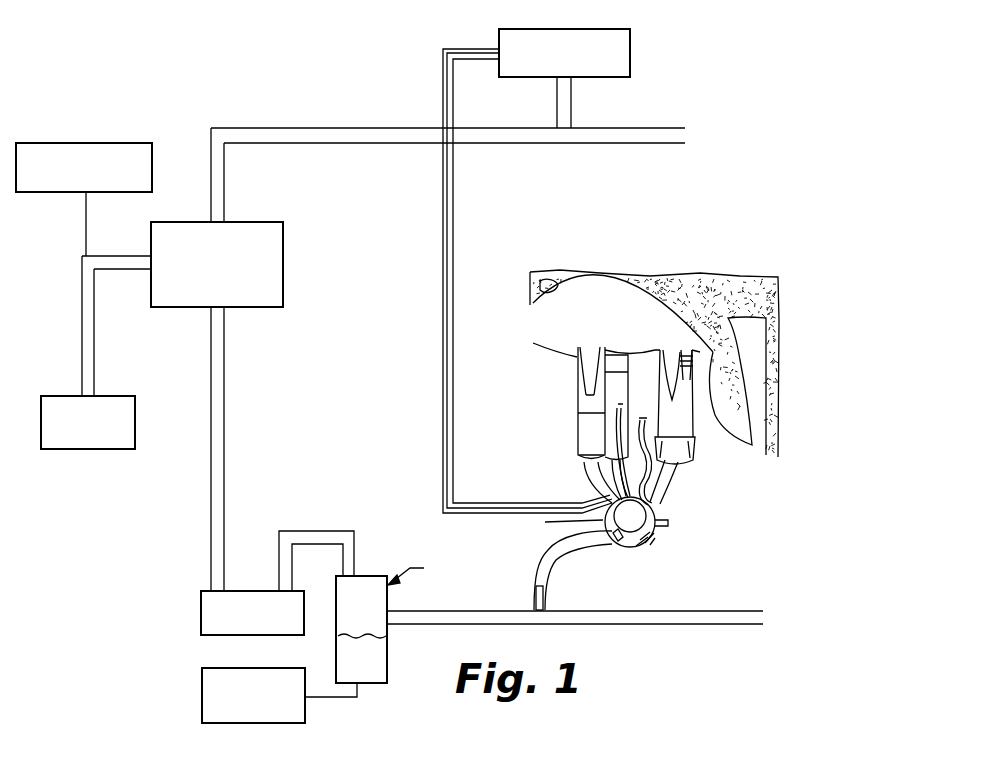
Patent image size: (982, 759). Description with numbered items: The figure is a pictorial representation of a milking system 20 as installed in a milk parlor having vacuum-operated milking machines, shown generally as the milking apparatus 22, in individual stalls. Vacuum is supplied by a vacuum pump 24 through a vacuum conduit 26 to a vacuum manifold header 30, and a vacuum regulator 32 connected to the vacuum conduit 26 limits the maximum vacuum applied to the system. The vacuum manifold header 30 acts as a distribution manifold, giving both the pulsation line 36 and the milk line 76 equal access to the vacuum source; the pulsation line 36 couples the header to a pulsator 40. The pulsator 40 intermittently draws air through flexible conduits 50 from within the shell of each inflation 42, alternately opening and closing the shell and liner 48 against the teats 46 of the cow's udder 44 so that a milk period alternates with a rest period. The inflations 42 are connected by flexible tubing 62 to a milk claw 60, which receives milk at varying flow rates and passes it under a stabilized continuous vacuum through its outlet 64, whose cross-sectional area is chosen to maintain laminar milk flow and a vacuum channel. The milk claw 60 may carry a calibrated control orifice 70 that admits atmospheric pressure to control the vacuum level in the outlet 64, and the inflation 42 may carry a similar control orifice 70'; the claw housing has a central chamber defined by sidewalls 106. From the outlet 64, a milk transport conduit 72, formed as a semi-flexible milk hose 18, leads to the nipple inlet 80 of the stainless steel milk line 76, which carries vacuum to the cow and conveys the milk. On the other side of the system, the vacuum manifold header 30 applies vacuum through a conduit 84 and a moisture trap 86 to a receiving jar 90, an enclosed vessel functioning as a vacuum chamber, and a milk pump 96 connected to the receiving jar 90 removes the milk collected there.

The milk hose 18 is at (548, 553).
The milking system 20 is at (350, 324).
The milking apparatus 22 is at (702, 425).
The vacuum pump 24 is at (120, 394).
The vacuum conduit 26 is at (80, 327).
The vacuum manifold header 30 is at (285, 235).
The vacuum regulator 32 is at (122, 143).
The pulsation line 36 is at (323, 128).
The pulsator 40 is at (633, 53).
The inflation 42 is at (675, 440).
The cow's udder 44 is at (637, 297).
The teat 46 is at (687, 373).
The shell and liner 48 is at (577, 372).
The flexible conduit 50 is at (455, 237).
The milk claw 60 is at (647, 546).
The flexible tubing 62 is at (680, 497).
The outlet 64 is at (612, 541).
The control orifice 70 is at (689, 534).
The control orifice 70' is at (571, 425).
The milk transport conduit 72 is at (528, 543).
The milk line 76 is at (708, 626).
The nipple inlet 80 is at (541, 601).
The conduit 84 is at (226, 497).
The moisture trap 86 is at (200, 615).
The receiving jar 90 is at (386, 683).
The milk pump 96 is at (200, 697).
The sidewalls 106 is at (555, 523).